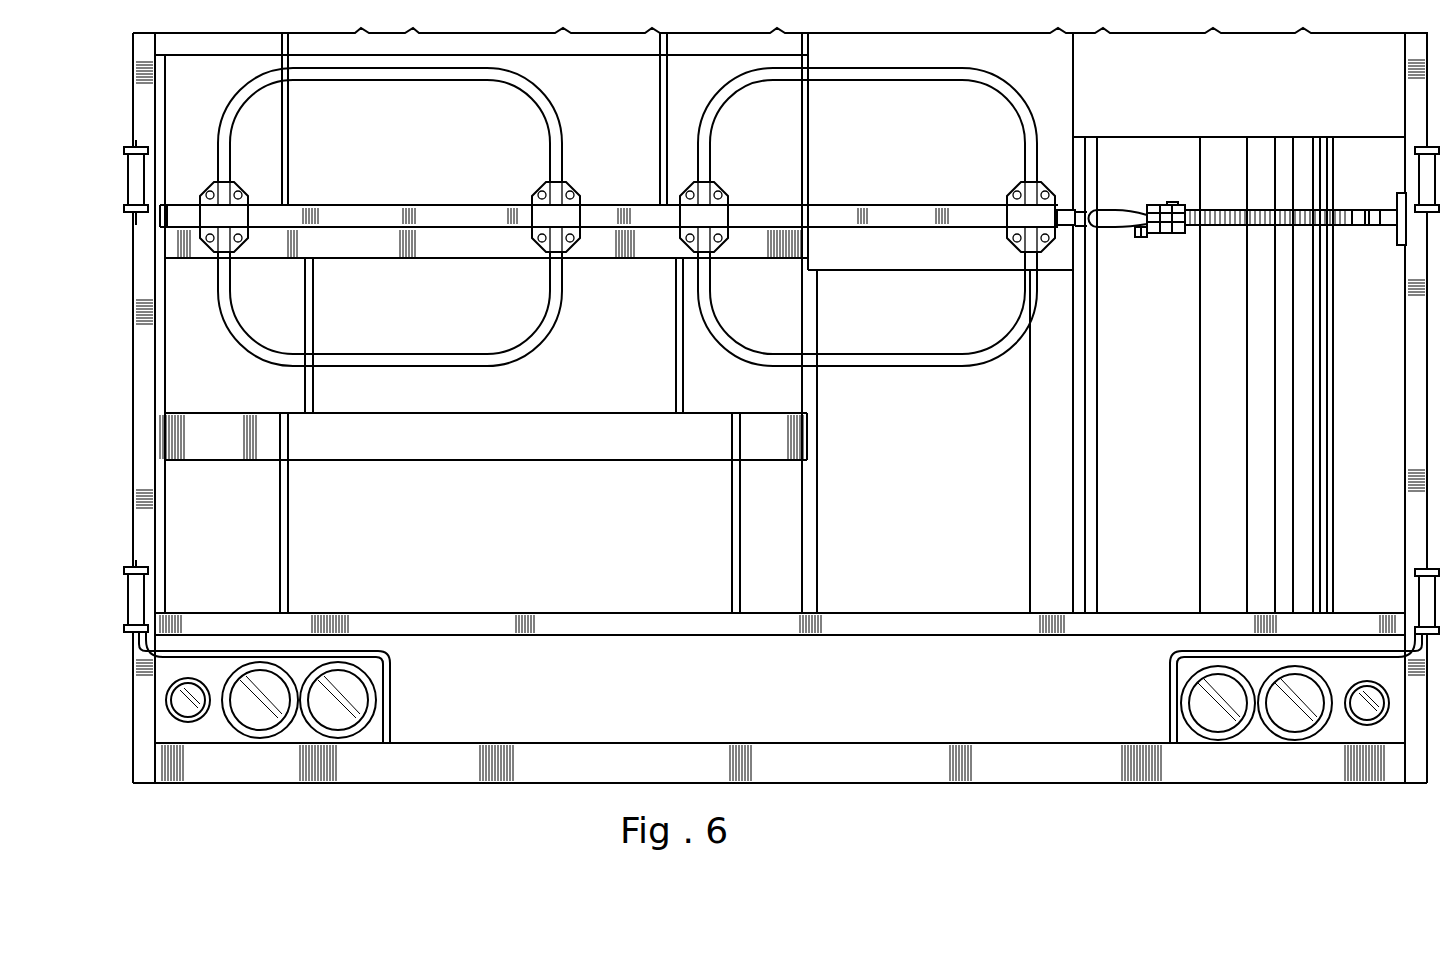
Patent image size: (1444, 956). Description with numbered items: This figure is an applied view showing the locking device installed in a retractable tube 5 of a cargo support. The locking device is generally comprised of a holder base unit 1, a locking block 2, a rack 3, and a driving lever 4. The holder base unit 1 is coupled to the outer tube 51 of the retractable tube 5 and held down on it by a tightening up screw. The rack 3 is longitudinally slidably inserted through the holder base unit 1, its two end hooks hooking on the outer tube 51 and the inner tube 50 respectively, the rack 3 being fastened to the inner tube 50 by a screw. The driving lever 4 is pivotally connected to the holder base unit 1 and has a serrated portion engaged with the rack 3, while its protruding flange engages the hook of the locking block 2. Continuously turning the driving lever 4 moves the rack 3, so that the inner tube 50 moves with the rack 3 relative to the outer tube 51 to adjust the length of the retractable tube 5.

The holder base unit 1 is at (1163, 204).
The locking block 2 is at (1147, 236).
The rack 3 is at (1223, 227).
The driving lever 4 is at (1108, 228).
The retractable tube 5 is at (623, 206).
The inner tube 50 is at (1387, 214).
The outer tube 51 is at (893, 216).